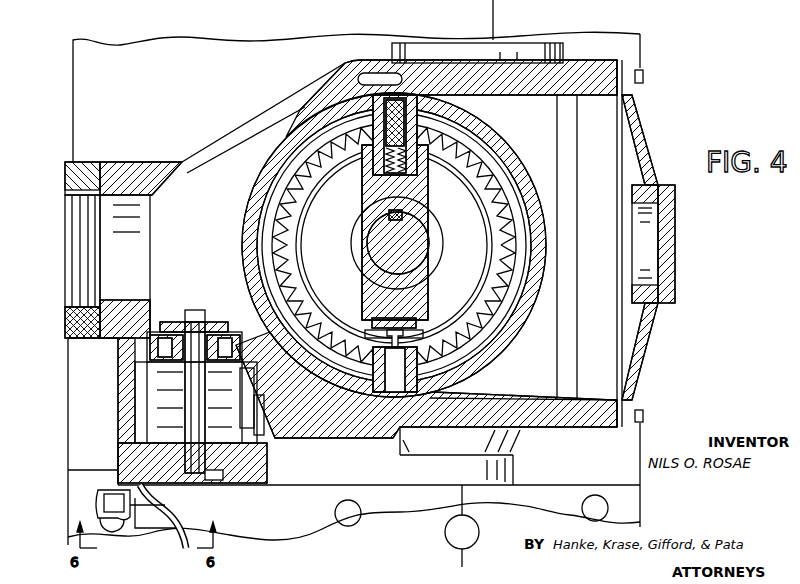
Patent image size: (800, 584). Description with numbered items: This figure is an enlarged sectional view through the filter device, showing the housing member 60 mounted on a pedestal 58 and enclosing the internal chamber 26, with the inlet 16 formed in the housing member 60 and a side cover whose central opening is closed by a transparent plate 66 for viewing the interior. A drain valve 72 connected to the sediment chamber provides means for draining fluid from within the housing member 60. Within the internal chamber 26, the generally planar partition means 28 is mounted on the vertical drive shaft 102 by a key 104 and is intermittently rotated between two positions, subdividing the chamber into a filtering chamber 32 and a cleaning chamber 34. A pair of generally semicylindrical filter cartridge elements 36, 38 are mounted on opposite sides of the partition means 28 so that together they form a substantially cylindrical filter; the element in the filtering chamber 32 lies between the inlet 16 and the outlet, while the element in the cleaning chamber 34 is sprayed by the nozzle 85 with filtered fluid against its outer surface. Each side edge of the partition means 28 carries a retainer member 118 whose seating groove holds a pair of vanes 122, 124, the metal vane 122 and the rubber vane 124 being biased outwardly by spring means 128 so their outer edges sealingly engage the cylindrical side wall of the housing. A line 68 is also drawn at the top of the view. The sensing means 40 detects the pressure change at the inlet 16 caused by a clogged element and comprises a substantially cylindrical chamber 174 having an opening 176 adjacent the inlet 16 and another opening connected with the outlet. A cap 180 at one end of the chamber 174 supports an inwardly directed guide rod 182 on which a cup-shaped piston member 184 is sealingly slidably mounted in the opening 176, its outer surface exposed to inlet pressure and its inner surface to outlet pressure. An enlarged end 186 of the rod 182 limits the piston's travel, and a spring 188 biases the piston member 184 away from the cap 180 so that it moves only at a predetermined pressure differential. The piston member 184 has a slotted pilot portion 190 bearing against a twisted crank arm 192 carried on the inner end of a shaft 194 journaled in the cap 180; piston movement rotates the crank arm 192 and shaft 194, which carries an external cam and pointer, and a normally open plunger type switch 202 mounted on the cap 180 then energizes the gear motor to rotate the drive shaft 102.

The inlet 16 is at (100, 212).
The internal chamber 26 is at (506, 95).
The partition means 28 is at (428, 188).
The filtering chamber 32 is at (342, 269).
The cleaning chamber 34 is at (474, 266).
The filter cartridge element 36 is at (282, 182).
The filter cartridge element 38 is at (498, 190).
The sensing means 40 is at (95, 507).
The pedestal 58 is at (282, 520).
The housing member 60 is at (582, 428).
The transparent plate 66 is at (678, 200).
The shaft line 68 is at (505, 20).
The drain valve 72 is at (480, 531).
The nozzle 85 is at (498, 357).
The vertical drive shaft 102 is at (360, 222).
The key 104 is at (403, 212).
The retainer member 118 is at (386, 165).
The vane 122 is at (436, 62).
The vane 124 is at (376, 96).
The spring means 128 is at (386, 186).
The cylindrical chamber 174 is at (135, 390).
The opening 176 is at (222, 324).
The cap 180 is at (276, 470).
The guide rod 182 is at (254, 425).
The piston member 184 is at (162, 332).
The enlarged end 186 is at (192, 310).
The spring 188 is at (254, 400).
The slotted pilot portion 190 is at (162, 392).
The crank arm 192 is at (162, 416).
The shaft 194 is at (210, 488).
The plunger type switch 202 is at (168, 540).